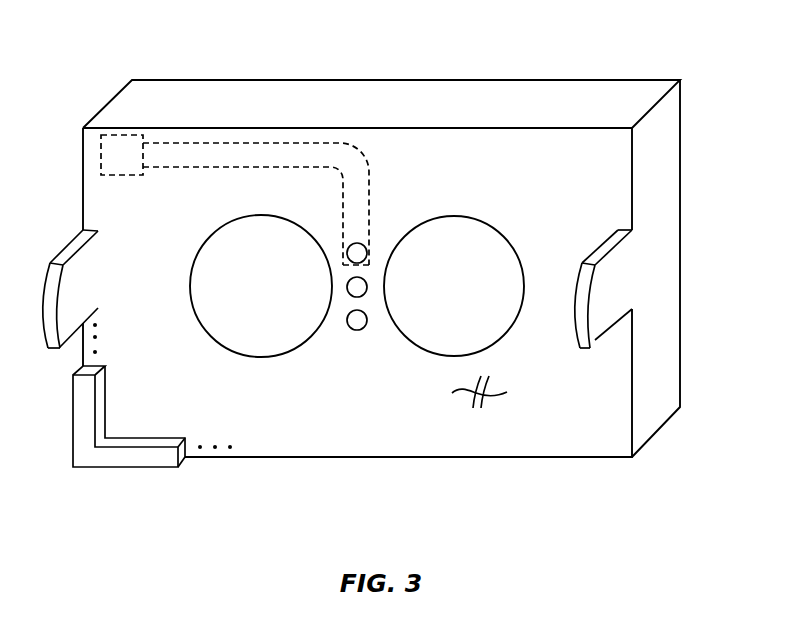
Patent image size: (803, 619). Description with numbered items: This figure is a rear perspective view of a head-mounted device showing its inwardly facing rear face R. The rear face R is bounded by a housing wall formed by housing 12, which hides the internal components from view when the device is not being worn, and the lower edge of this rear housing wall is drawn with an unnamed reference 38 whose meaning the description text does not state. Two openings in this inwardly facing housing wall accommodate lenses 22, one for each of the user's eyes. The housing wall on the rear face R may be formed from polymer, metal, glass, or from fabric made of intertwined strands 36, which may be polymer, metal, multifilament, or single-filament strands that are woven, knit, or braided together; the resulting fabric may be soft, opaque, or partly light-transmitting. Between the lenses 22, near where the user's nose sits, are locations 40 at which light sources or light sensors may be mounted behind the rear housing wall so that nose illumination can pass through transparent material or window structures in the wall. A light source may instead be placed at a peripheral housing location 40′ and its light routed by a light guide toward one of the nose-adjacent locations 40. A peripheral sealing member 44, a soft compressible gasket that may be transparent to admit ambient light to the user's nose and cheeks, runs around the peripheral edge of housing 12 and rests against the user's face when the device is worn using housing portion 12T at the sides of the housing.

The housing 12 is at (680, 112).
The housing portion 12T is at (65, 250).
The lenses 22 is at (463, 238).
The strands 36 is at (496, 397).
The housing wall 38 is at (560, 432).
The locations 40 is at (364, 246).
The location 40′ is at (102, 148).
The peripheral sealing member 44 is at (112, 467).
The rear face R is at (373, 414).